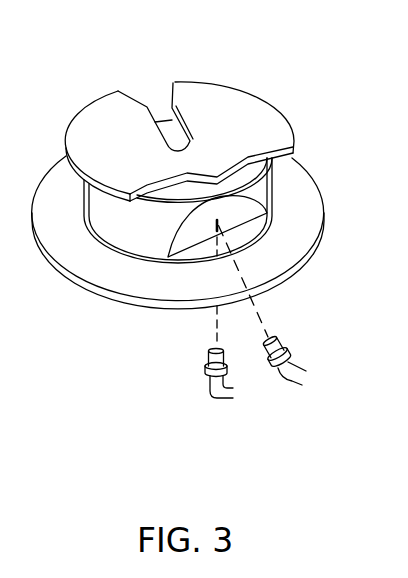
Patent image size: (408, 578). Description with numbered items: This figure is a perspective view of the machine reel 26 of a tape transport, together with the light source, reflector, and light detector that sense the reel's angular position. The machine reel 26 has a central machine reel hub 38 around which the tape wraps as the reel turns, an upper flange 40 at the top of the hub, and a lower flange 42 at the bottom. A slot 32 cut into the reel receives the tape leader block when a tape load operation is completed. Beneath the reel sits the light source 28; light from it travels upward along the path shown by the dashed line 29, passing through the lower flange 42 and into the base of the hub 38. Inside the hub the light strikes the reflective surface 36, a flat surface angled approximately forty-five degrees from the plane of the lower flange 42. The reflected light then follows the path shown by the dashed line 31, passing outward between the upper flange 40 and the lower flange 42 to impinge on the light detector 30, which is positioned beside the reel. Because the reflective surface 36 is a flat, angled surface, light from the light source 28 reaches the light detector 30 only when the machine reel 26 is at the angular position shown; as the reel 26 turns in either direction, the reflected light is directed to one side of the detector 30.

The machine reel 26 is at (74, 303).
The light source 28 is at (206, 358).
The dashed line 29 is at (212, 326).
The light detector 30 is at (290, 341).
The dashed line 31 is at (258, 311).
The slot 32 is at (160, 77).
The reflective surface 36 is at (240, 214).
The machine reel hub 38 is at (273, 190).
The upper flange 40 is at (245, 90).
The lower flange 42 is at (318, 178).